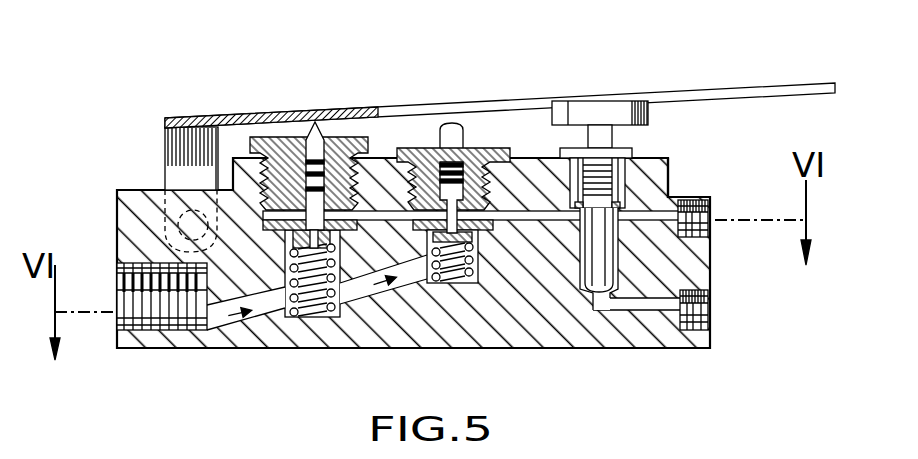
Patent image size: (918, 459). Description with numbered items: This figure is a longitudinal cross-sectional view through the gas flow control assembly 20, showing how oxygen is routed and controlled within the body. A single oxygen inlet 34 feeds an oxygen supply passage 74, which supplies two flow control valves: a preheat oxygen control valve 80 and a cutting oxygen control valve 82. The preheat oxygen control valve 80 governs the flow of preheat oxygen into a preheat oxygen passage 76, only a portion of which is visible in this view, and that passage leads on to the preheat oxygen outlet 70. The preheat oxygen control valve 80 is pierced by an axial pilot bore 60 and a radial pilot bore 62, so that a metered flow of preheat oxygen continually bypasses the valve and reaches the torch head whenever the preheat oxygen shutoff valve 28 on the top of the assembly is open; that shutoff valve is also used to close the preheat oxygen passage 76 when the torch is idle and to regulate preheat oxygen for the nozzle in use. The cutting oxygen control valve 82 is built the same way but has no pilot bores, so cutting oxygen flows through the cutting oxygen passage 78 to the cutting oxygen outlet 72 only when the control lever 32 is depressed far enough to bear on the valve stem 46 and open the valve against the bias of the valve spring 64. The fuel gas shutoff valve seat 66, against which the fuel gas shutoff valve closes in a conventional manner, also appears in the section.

The gas flow control assembly 20 is at (667, 65).
The preheat oxygen shutoff valve 28 is at (598, 108).
The control lever 32 is at (795, 87).
The oxygen inlet 34 is at (117, 290).
The valve stem 46 is at (343, 128).
The axial pilot bore 60 is at (289, 142).
The radial pilot bore 62 is at (316, 125).
The valve spring 64 is at (452, 282).
The fuel gas shutoff valve seat 66 is at (620, 297).
The preheat oxygen outlet 70 is at (708, 318).
The cutting oxygen outlet 72 is at (708, 223).
The oxygen supply passage 74 is at (247, 320).
The preheat oxygen passage 76 is at (361, 307).
The cutting oxygen passage 78 is at (645, 217).
The preheat oxygen control valve 80 is at (278, 233).
The cutting oxygen control valve 82 is at (497, 213).